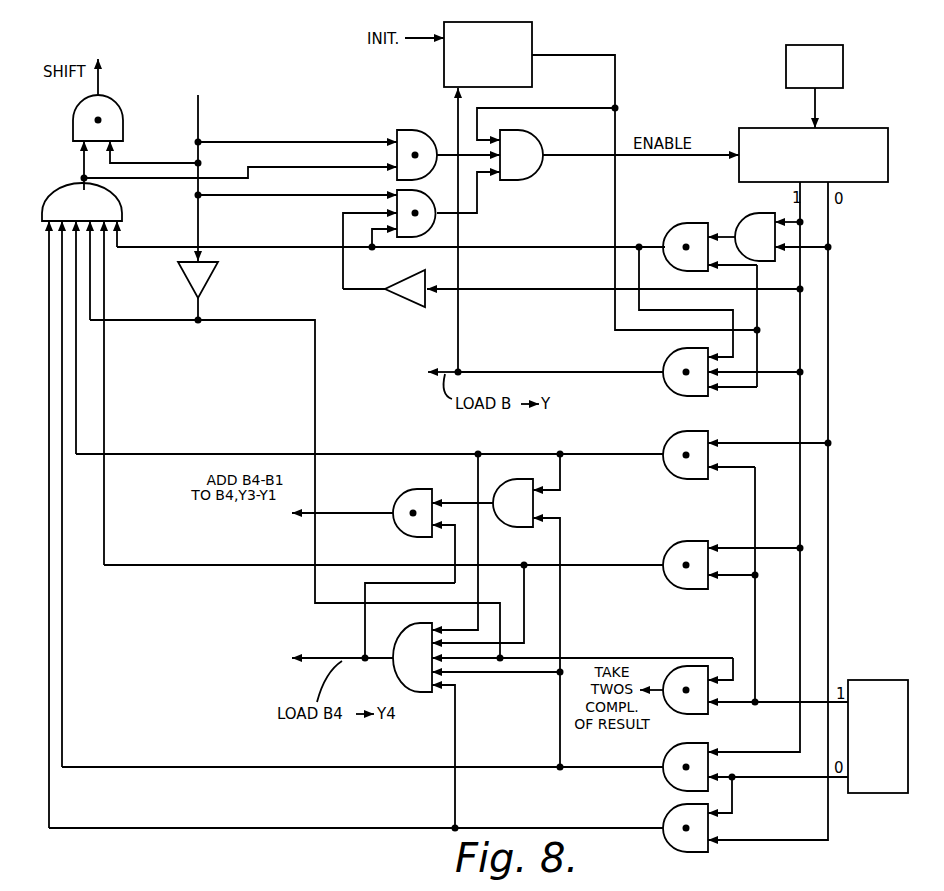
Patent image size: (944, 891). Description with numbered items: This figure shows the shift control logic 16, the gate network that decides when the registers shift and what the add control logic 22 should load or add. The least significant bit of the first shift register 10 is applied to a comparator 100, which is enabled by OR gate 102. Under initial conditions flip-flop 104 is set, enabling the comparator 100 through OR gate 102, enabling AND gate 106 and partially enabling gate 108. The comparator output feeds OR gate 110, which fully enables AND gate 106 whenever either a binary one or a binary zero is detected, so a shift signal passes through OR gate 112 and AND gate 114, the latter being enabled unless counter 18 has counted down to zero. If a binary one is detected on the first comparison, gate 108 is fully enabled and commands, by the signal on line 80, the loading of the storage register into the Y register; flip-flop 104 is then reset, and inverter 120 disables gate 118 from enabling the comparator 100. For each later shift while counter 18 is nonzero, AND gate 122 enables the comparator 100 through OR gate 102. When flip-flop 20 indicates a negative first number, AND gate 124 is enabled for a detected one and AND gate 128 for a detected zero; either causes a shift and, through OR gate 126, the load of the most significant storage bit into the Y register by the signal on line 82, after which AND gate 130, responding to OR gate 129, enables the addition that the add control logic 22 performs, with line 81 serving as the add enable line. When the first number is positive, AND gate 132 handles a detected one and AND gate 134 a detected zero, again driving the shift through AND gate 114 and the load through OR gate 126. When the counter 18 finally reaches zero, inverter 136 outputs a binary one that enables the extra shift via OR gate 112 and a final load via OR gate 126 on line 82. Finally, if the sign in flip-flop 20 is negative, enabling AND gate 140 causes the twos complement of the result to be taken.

The first shift register 10 is at (777, 66).
The shift control logic 16 is at (316, 73).
The counter 18 is at (200, 85).
The flip-flop 20 is at (870, 793).
The add control logic 22 is at (290, 507).
The line 80 is at (473, 372).
The line 81 is at (303, 515).
The line 82 is at (322, 655).
The comparator 100 is at (781, 133).
The OR gate 102 is at (532, 172).
The flip-flop 104 is at (529, 41).
The AND gate 106 is at (673, 240).
The gate 108 is at (672, 380).
The OR gate 110 is at (743, 225).
The OR gate 112 is at (70, 192).
The AND gate 114 is at (83, 112).
The gate 118 is at (430, 216).
The inverter 120 is at (397, 292).
The AND gate 122 is at (408, 132).
The AND gate 124 is at (673, 572).
The OR gate 126 is at (421, 625).
The AND gate 128 is at (671, 462).
The OR gate 129 is at (532, 498).
The AND gate 130 is at (416, 495).
The AND gate 132 is at (670, 778).
The AND gate 134 is at (668, 820).
The inverter 136 is at (213, 267).
The AND gate 140 is at (700, 712).